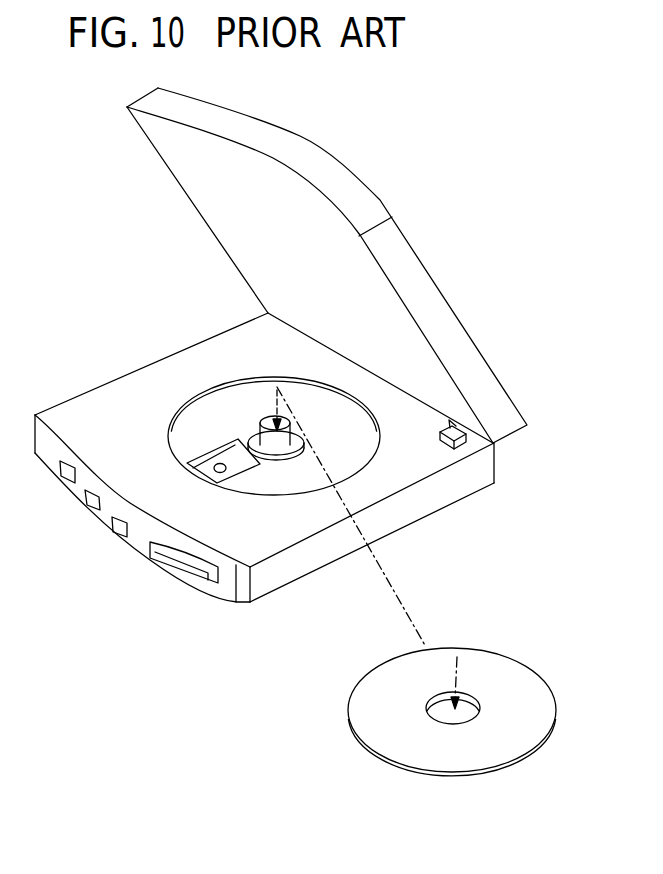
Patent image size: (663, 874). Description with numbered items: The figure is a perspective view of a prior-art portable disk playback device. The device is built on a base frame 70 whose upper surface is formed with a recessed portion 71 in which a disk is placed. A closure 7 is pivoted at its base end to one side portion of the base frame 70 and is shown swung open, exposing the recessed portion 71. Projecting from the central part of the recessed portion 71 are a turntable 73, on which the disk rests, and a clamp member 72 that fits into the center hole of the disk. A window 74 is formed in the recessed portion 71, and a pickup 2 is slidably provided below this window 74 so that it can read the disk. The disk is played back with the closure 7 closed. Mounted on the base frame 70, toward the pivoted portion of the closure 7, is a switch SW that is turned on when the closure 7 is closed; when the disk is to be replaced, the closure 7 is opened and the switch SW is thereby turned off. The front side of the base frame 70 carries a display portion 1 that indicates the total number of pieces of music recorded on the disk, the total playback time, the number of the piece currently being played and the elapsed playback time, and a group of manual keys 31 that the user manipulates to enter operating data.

The closure 7 is at (357, 198).
The base frame 70 is at (422, 508).
The recessed portion 71 is at (218, 390).
The clamp member 72 is at (264, 415).
The turntable 73 is at (282, 455).
The window 74 is at (230, 472).
The pickup 2 is at (212, 458).
The display portion 1 is at (193, 573).
The manual keys 31 is at (75, 512).
The switch SW is at (458, 451).
The disc D is at (503, 655).